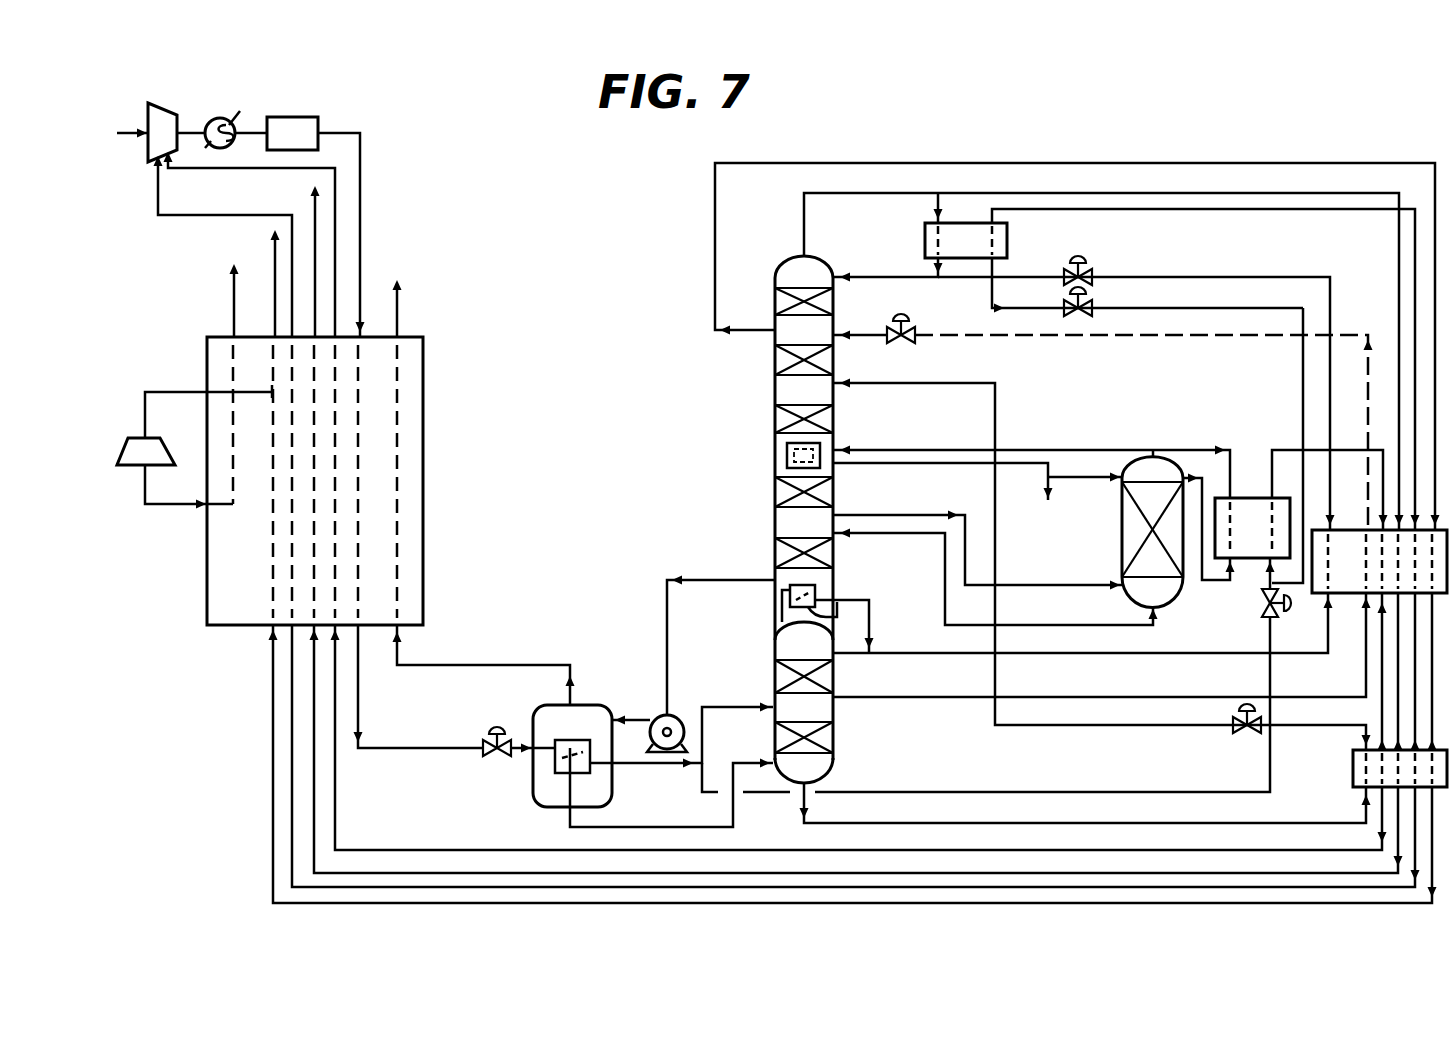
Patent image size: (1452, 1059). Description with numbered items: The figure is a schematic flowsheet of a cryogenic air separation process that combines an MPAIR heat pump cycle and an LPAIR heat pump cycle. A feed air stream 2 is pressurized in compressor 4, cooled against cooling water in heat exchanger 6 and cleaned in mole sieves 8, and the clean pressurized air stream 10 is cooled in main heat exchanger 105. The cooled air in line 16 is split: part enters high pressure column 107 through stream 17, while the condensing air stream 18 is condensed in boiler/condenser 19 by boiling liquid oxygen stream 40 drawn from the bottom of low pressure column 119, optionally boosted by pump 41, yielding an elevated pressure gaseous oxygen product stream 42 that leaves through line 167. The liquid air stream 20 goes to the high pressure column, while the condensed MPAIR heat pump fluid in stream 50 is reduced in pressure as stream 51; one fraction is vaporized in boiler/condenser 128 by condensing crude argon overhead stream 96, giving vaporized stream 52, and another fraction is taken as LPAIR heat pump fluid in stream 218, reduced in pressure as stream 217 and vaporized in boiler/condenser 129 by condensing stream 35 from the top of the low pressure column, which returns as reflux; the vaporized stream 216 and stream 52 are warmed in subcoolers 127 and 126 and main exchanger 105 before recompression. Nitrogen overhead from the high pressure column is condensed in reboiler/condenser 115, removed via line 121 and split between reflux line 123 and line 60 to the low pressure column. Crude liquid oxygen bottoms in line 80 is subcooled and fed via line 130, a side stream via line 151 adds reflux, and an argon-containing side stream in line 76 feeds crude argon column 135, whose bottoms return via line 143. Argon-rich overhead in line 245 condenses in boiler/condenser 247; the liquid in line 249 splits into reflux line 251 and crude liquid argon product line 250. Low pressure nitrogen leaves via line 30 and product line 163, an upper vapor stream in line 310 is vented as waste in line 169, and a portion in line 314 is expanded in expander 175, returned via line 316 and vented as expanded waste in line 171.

The feed air stream 2 is at (132, 130).
The compressor 4 is at (157, 112).
The heat exchanger 6 is at (221, 118).
The mole sieves 8 is at (282, 117).
The clean pressurized air stream 10 is at (368, 216).
The cooled feed air line 16 is at (400, 747).
The feed air stream to high pressure column 17 is at (450, 793).
The condensing air stream 18 is at (457, 747).
The boiler/condenser 19 is at (544, 708).
The liquid air stream 20 is at (746, 708).
The low pressure nitrogen-rich overhead line 30 is at (805, 247).
The low pressure column top stream 35 is at (930, 209).
The liquid oxygen stream 40 is at (724, 580).
The pump 41 is at (656, 710).
The gaseous oxygen product stream 42 is at (572, 690).
The MPAIR heat pump fluid stream 50 is at (1272, 639).
The condensed air stream 51 is at (1287, 603).
The vaporized MPAIR heat pump fluid stream 52 is at (1296, 450).
The nitrogen reflux line 60 is at (1075, 655).
The argon-containing side stream line 76 is at (904, 518).
The crude liquid oxygen bottoms line 80 is at (1159, 822).
The crude argon distillation overhead stream 96 is at (1167, 449).
The main heat exchanger 105 is at (207, 587).
The high pressure column 107 is at (833, 708).
The reboiler/condenser 115 is at (825, 609).
The low pressure column 119 is at (772, 392).
The condensed nitrogen line 121 is at (867, 637).
The high pressure column reflux line 123 is at (856, 653).
The subcooler heat exchanger 126 is at (1353, 762).
The subcooler heat exchanger 127 is at (1342, 600).
The boiler/condenser 128 is at (1256, 574).
The boiler/condenser 129 is at (922, 254).
The crude liquid oxygen feed line 130 is at (893, 386).
The crude argon column 135 is at (1120, 508).
The crude argon column bottoms recycle line 143 is at (1070, 625).
The high pressure column side stream line 151 is at (1168, 698).
The low pressure nitrogen product line 163 is at (316, 222).
The gaseous oxygen product line 167 is at (397, 318).
The waste vent line 169 is at (275, 265).
The expanded waste line 171 is at (248, 302).
The expander 175 is at (130, 446).
The vaporized LPAIR heat pump stream 216 is at (1104, 213).
The pressure-reduced LPAIR heat pump stream 217 is at (988, 305).
The LPAIR heat pump fluid stream 218 is at (1301, 386).
The argon-rich vapor overhead line 245 is at (1112, 444).
The boiler/condenser 247 is at (833, 446).
The condensed argon-rich liquid line 249 is at (886, 463).
The crude liquid argon product line 250 is at (1022, 488).
The crude argon column reflux line 251 is at (1096, 477).
The upper vapor stream line 310 is at (716, 250).
The expander feed line 314 is at (181, 392).
The expander return line 316 is at (171, 505).